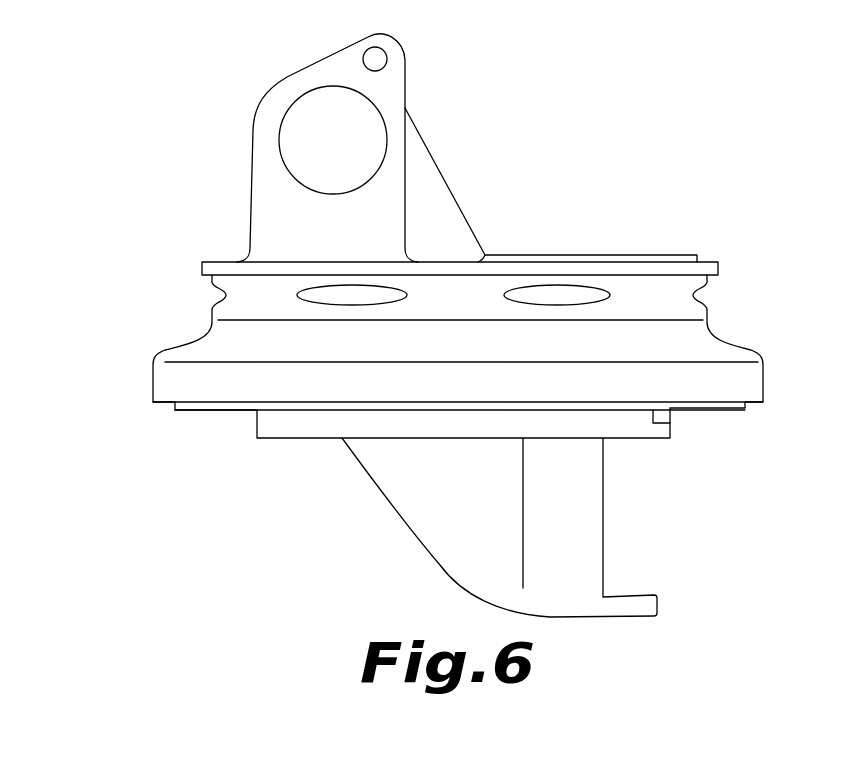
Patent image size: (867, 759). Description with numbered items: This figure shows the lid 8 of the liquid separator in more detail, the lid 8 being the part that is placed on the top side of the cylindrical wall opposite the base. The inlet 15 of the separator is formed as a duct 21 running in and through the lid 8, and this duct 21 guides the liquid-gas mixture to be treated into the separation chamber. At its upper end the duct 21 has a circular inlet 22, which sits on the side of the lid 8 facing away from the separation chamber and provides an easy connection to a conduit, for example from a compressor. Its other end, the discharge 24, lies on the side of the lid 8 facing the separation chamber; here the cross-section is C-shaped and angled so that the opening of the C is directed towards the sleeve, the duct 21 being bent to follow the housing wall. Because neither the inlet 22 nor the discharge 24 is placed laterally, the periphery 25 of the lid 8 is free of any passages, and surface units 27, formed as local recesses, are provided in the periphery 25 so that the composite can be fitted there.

The lid 8 is at (140, 102).
The inlet 15 is at (303, 133).
The duct 21 is at (430, 190).
The circular inlet 22 is at (308, 148).
The discharge 24 is at (630, 593).
The periphery 25 is at (217, 362).
The surface units 27 is at (537, 297).